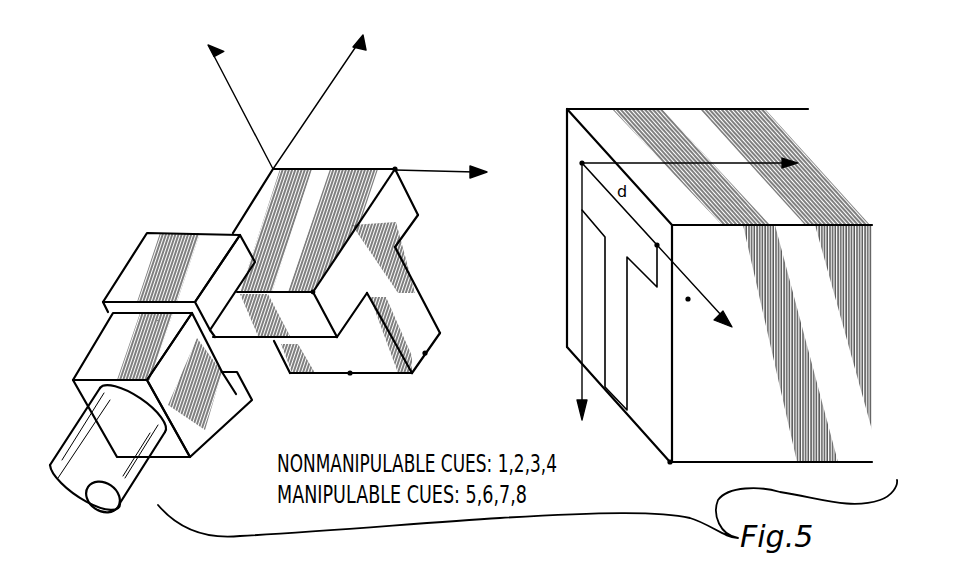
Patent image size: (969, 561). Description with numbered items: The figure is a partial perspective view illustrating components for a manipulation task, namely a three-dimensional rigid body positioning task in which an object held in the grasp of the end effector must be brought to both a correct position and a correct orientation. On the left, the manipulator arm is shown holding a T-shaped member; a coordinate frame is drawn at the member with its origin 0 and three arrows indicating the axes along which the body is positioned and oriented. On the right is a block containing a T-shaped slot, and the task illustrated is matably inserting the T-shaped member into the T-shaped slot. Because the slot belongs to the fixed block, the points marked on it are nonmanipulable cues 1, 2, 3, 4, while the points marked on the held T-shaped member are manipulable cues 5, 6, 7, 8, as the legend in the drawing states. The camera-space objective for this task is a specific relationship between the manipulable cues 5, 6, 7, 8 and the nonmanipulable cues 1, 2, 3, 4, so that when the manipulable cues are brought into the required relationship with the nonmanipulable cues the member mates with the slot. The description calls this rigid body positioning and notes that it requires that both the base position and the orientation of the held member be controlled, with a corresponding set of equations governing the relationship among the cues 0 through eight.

The origin of coordinate frame 0 is at (326, 266).
The nonmanipulable cue point 1 is at (687, 280).
The nonmanipulable cue point 2 is at (621, 205).
The nonmanipulable cue point 3 is at (676, 450).
The nonmanipulable cue point 4 is at (694, 290).
The manipulable cue point 5 is at (399, 160).
The manipulable cue point 6 is at (320, 298).
The manipulable cue point 7 is at (419, 347).
The manipulable cue point 8 is at (355, 365).